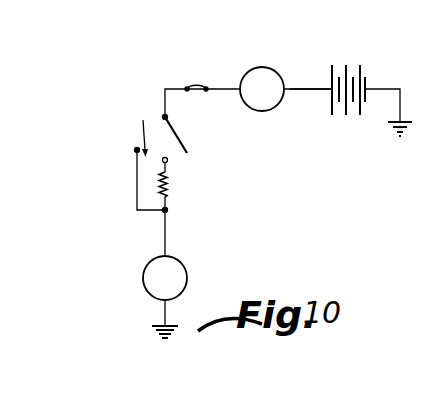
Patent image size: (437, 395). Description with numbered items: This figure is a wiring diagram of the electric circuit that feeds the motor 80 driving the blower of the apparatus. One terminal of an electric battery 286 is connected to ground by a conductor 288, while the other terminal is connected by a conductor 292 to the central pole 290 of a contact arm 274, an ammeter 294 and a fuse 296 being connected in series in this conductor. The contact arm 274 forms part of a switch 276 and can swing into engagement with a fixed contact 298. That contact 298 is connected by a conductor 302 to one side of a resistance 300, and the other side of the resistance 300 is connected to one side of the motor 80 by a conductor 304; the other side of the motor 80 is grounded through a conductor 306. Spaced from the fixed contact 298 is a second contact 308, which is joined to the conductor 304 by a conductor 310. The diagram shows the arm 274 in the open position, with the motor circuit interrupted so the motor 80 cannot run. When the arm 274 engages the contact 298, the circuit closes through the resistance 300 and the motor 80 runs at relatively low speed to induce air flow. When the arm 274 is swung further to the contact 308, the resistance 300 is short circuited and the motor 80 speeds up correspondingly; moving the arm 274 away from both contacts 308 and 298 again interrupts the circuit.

The motor 80 is at (185, 270).
The contact arm 274 is at (183, 143).
The switch 276 is at (149, 129).
The electric battery 286 is at (339, 76).
The conductor 288 is at (382, 89).
The central pole 290 is at (168, 117).
The conductor 292 is at (313, 90).
The ammeter 294 is at (245, 67).
The fuse 296 is at (197, 89).
The fixed contact 298 is at (168, 160).
The resistance 300 is at (168, 198).
The conductor 302 is at (167, 167).
The conductor 304 is at (163, 232).
The conductor 306 is at (161, 312).
The second contact 308 is at (137, 149).
The conductor 310 is at (137, 190).